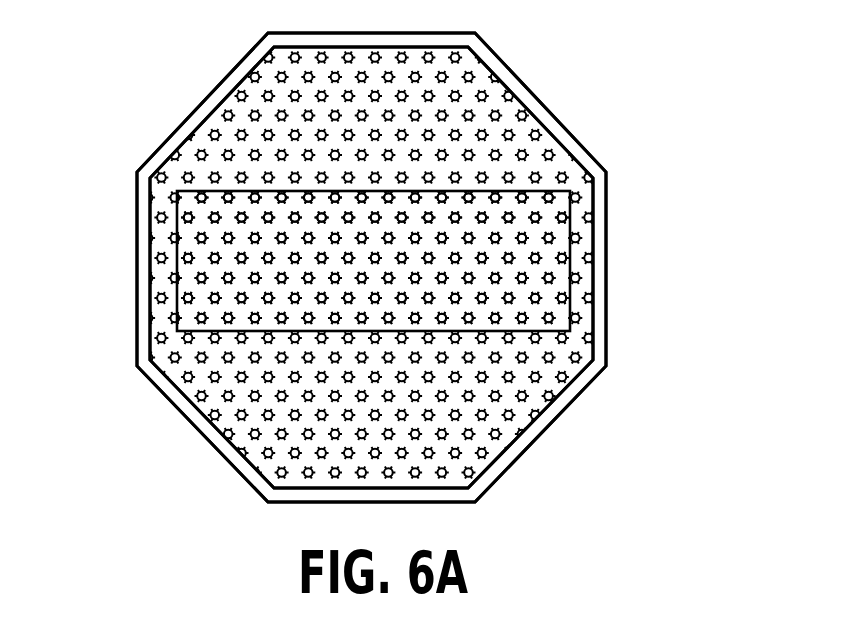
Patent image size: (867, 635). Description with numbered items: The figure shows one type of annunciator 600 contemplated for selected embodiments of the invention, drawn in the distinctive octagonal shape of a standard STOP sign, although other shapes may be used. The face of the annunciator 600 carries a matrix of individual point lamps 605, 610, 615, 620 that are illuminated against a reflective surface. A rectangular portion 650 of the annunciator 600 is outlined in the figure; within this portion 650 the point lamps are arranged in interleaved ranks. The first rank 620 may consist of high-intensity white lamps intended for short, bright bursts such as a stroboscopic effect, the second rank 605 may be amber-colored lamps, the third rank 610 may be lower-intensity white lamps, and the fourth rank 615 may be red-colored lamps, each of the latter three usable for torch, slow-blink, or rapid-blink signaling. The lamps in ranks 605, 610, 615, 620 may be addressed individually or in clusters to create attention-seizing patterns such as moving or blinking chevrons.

The annunciator 600 is at (552, 115).
The second rank of point lamps 605 is at (162, 215).
The third rank of point lamps 610 is at (175, 243).
The fourth rank of point lamps 615 is at (152, 262).
The first rank of point lamps 620 is at (538, 427).
The portion of annunciator 650 is at (570, 243).